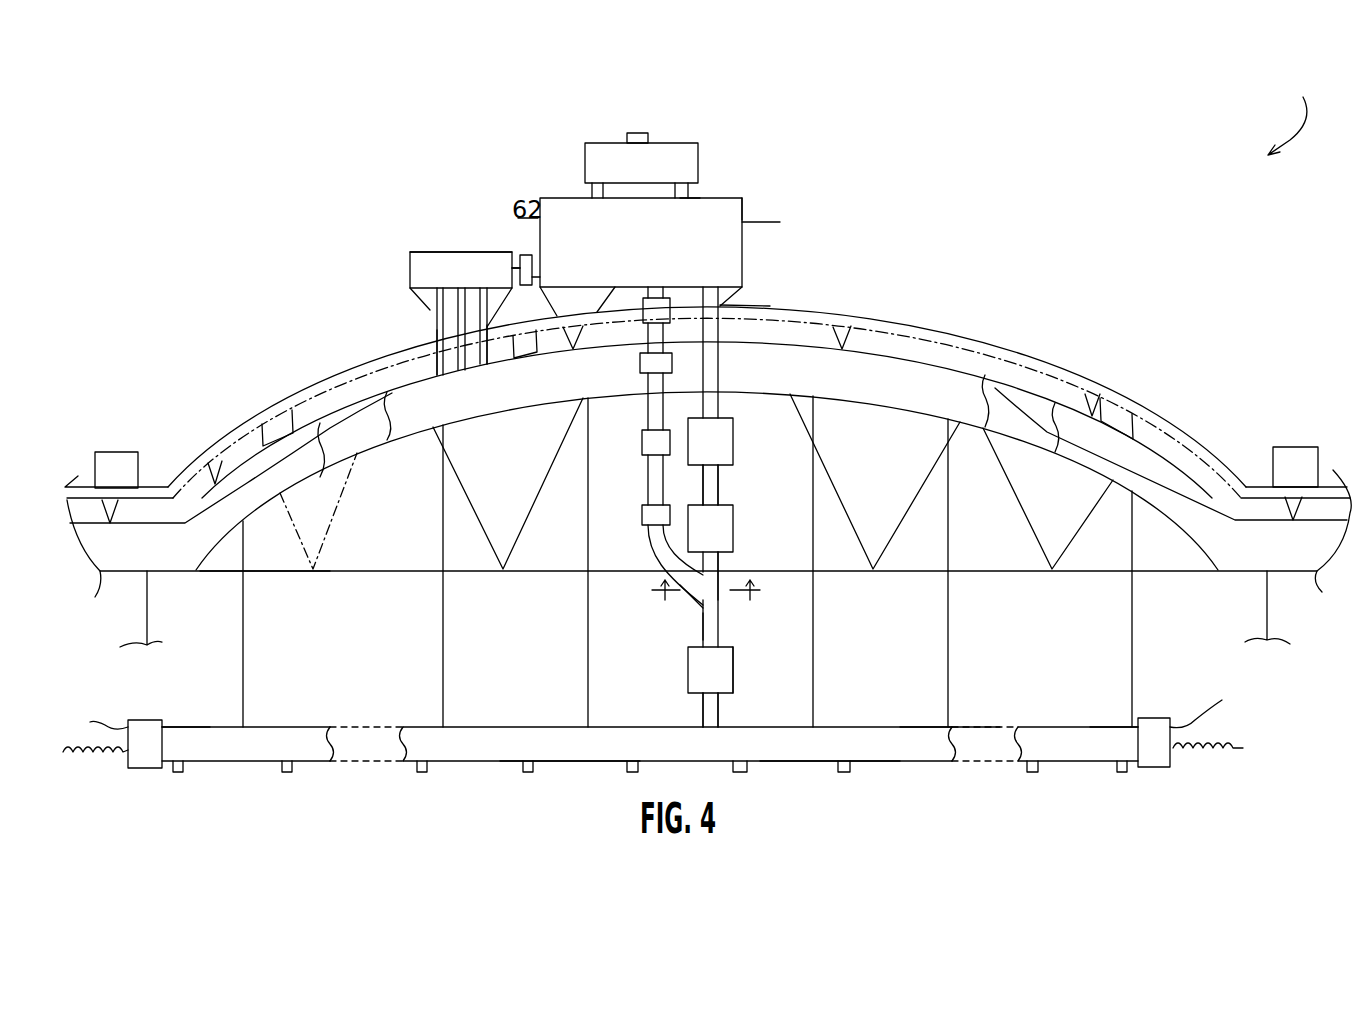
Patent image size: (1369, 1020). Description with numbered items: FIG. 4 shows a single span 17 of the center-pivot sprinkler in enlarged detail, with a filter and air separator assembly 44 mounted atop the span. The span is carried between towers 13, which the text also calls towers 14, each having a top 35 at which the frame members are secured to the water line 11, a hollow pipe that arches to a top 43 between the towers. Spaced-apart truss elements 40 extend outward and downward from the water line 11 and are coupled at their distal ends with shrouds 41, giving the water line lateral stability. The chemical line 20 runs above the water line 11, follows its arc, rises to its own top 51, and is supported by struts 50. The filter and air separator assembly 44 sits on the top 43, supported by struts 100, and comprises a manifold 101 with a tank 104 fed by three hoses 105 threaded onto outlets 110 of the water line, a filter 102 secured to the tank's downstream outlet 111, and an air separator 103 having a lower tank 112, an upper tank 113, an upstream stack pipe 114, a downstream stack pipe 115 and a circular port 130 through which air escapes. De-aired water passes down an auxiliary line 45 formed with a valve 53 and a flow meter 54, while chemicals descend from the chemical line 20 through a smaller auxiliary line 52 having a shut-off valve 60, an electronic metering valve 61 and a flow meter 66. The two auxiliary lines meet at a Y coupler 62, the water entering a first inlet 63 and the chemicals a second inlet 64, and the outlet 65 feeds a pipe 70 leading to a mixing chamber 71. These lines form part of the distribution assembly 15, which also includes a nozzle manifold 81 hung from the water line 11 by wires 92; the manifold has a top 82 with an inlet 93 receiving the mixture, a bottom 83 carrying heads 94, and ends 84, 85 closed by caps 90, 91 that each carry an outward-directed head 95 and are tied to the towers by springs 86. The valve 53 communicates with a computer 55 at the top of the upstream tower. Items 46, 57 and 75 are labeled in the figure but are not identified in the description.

The water line 11 is at (960, 353).
The tower 13 is at (705, 609).
The tower 14 is at (178, 772).
The distribution assembly 15 is at (940, 750).
The span 17 is at (1282, 116).
The chemical line 20 is at (900, 323).
The top of the tower 35 is at (150, 573).
The truss elements 40 is at (320, 552).
The shrouds 41 is at (270, 573).
The top of the water line 43 is at (733, 340).
The filter and air separator assembly 44 is at (738, 186).
The auxiliary line 45 is at (720, 490).
The flow direction 46 is at (773, 232).
The struts 50 is at (258, 428).
The top of the chemical line 51 is at (730, 307).
The auxiliary line 52 is at (642, 513).
The valve 53 is at (735, 441).
The flow meter 54 is at (735, 531).
The computer 55 is at (96, 452).
The flow arrow 57 is at (656, 599).
The shut-off valve 60 is at (640, 366).
The electronic metering valve 61 is at (645, 450).
The Y coupler 62 is at (720, 608).
The first inlet 63 is at (722, 580).
The second inlet 64 is at (680, 602).
The outlet 65 is at (690, 615).
The flow meter 66 is at (646, 531).
The pipe 70 is at (735, 660).
The mixing chamber 71 is at (735, 680).
The flow arrow 75 is at (759, 599).
The nozzle manifold 81 is at (570, 762).
The top of the nozzle manifold 82 is at (700, 725).
The bottom of the nozzle manifold 83 is at (815, 762).
The end of the nozzle manifold 84 is at (175, 727).
The end of the nozzle manifold 85 is at (1140, 727).
The springs 86 is at (75, 756).
The cap 90 is at (143, 768).
The cap 91 is at (1162, 767).
The wires 92 is at (243, 667).
The inlet 93 is at (96, 719).
The heads 94 is at (250, 812).
The head 95 is at (1215, 709).
The struts 100 is at (420, 305).
The manifold 101 is at (410, 268).
The filter 102 is at (527, 253).
The air separator 103 is at (557, 198).
The tank 104 is at (437, 252).
The hoses 105 is at (437, 326).
The outlets 110 is at (452, 358).
The downstream outlet 111 is at (520, 258).
The lower tank 112 is at (705, 196).
The upper tank 113 is at (700, 185).
The upstream stack pipe 114 is at (617, 198).
The downstream stack pipe 115 is at (692, 198).
The circular port 130 is at (648, 133).